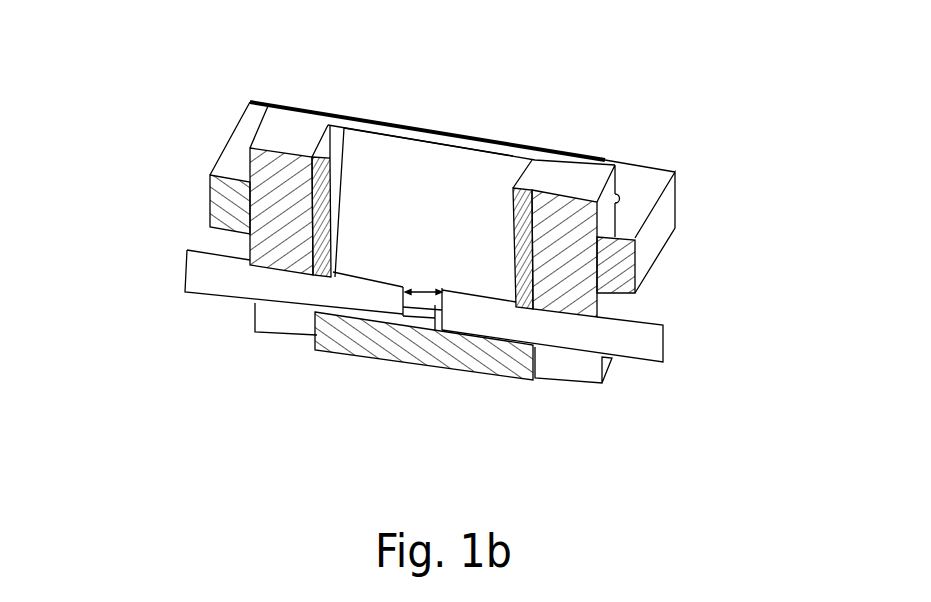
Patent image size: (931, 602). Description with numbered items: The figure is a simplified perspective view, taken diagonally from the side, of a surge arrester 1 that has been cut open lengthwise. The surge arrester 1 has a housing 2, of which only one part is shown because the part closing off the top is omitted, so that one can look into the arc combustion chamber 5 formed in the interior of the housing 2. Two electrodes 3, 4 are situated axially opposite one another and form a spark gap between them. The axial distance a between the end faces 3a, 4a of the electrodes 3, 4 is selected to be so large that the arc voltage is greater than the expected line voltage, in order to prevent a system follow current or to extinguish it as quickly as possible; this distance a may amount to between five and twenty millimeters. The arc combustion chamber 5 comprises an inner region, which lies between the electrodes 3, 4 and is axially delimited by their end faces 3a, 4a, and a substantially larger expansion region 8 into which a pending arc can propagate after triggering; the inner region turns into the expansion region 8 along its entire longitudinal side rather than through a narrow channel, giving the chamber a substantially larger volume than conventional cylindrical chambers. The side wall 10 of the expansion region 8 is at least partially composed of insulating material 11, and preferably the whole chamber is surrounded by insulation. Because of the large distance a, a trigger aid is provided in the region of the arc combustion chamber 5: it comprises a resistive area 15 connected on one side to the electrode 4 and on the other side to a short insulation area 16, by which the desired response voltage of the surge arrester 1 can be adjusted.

The surge arrester 1 is at (454, 254).
The housing 2 is at (688, 186).
The electrode 3 is at (640, 342).
The end face 3a is at (442, 310).
The electrode 4 is at (200, 273).
The end face 4a is at (398, 305).
The arc combustion chamber 5 is at (410, 128).
The expansion region 8 is at (384, 132).
The side wall 10 is at (478, 173).
The insulating material 11 is at (312, 207).
The resistive area 15 is at (413, 320).
The insulation area 16 is at (427, 305).
The axial distance a is at (430, 288).